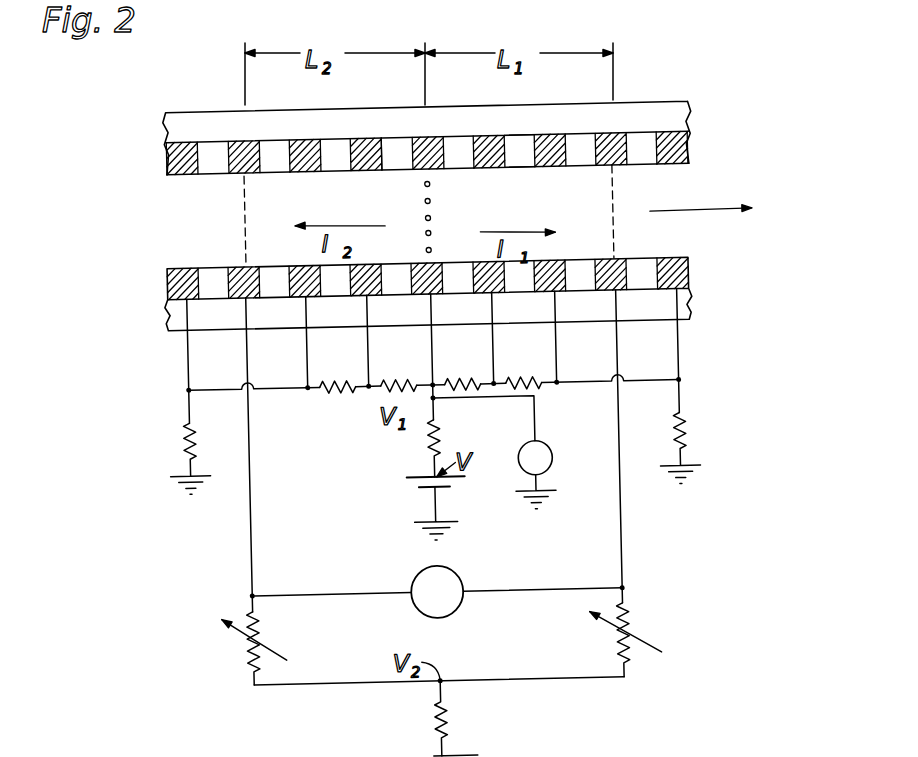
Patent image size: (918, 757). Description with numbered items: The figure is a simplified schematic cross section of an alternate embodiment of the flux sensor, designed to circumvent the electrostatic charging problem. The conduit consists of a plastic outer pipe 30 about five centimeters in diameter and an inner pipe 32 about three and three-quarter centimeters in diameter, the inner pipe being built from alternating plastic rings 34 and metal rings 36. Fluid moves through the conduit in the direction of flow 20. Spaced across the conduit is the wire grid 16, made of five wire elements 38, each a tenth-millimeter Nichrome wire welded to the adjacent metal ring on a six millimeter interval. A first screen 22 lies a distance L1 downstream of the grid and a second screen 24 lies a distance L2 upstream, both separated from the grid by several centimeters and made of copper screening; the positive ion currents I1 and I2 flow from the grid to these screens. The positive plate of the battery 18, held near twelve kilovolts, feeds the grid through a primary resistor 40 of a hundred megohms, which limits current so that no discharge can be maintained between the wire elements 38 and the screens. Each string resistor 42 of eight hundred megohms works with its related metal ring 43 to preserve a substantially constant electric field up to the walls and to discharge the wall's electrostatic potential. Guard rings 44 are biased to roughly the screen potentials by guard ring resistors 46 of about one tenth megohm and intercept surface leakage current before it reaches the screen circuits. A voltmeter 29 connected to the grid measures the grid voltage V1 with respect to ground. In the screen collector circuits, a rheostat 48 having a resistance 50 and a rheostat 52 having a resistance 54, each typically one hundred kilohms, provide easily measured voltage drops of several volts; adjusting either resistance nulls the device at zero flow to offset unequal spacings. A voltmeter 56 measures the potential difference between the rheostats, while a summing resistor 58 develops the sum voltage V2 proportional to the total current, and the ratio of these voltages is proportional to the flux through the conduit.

The wire grid 16 is at (422, 200).
The battery 18 is at (403, 477).
The direction of flow 20 is at (722, 216).
The first screen 22 is at (620, 202).
The second screen 24 is at (249, 216).
The voltmeter 29 is at (549, 450).
The outer pipe 30 is at (203, 108).
The inner pipe 32 is at (190, 183).
The plastic rings 34 is at (522, 162).
The metal rings 36 is at (612, 166).
The wire elements 38 is at (446, 192).
The primary resistor 40 is at (439, 432).
The string resistor 42 is at (326, 385).
The metal ring 43 is at (369, 141).
The guard rings 44 is at (189, 253).
The guard ring resistors 46 is at (182, 429).
The rheostat 48 is at (213, 603).
The resistance 50 is at (242, 648).
The rheostat 52 is at (640, 613).
The resistance 54 is at (655, 657).
The voltmeter 56 is at (416, 568).
The summing resistor 58 is at (423, 712).